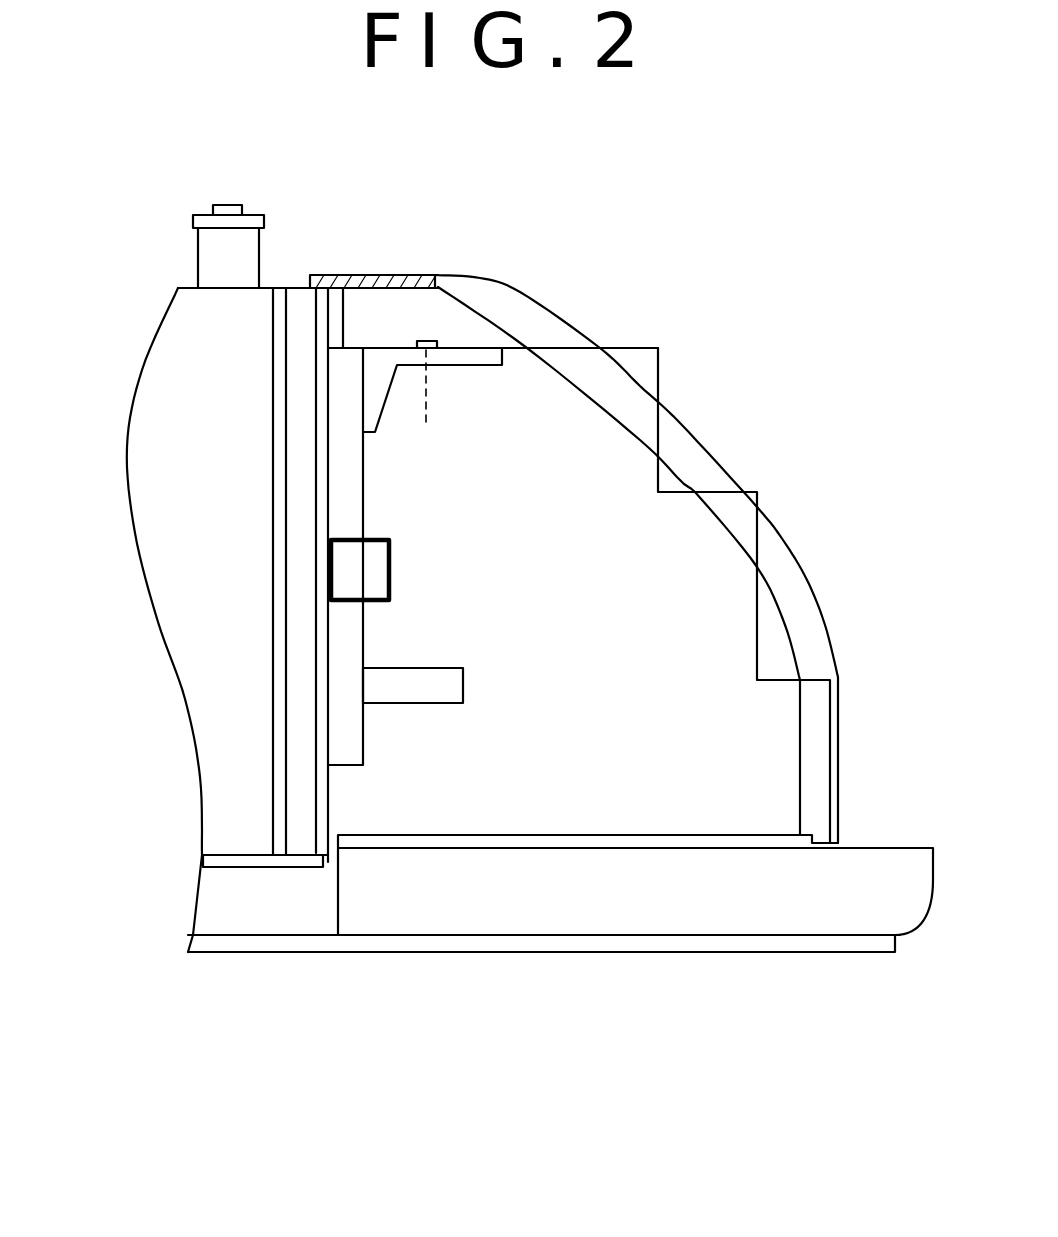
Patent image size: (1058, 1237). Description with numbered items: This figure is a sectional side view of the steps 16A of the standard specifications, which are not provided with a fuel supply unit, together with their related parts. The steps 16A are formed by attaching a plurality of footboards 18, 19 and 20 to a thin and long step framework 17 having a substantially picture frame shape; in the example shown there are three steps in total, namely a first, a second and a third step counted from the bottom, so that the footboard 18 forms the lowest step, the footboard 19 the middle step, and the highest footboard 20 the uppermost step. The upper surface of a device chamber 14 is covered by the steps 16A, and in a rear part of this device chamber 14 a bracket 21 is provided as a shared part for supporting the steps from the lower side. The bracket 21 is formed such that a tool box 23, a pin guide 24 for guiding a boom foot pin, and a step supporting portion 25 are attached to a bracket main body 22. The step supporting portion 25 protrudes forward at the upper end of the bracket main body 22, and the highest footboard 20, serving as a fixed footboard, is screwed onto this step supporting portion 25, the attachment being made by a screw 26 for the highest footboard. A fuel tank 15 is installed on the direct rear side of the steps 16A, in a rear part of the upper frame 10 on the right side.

The upper frame 10 is at (567, 952).
The device chamber 14 is at (641, 673).
The fuel tank 15 is at (160, 402).
The steps 16A is at (624, 559).
The step framework 17 is at (797, 557).
The footboard 18 is at (813, 680).
The footboard 19 is at (720, 490).
The highest footboard 20 is at (628, 348).
The bracket 21 is at (441, 566).
The bracket main body 22 is at (363, 628).
The tool box 23 is at (412, 703).
The pin guide 24 is at (390, 575).
The step supporting portion 25 is at (475, 367).
The screw 26 is at (426, 400).